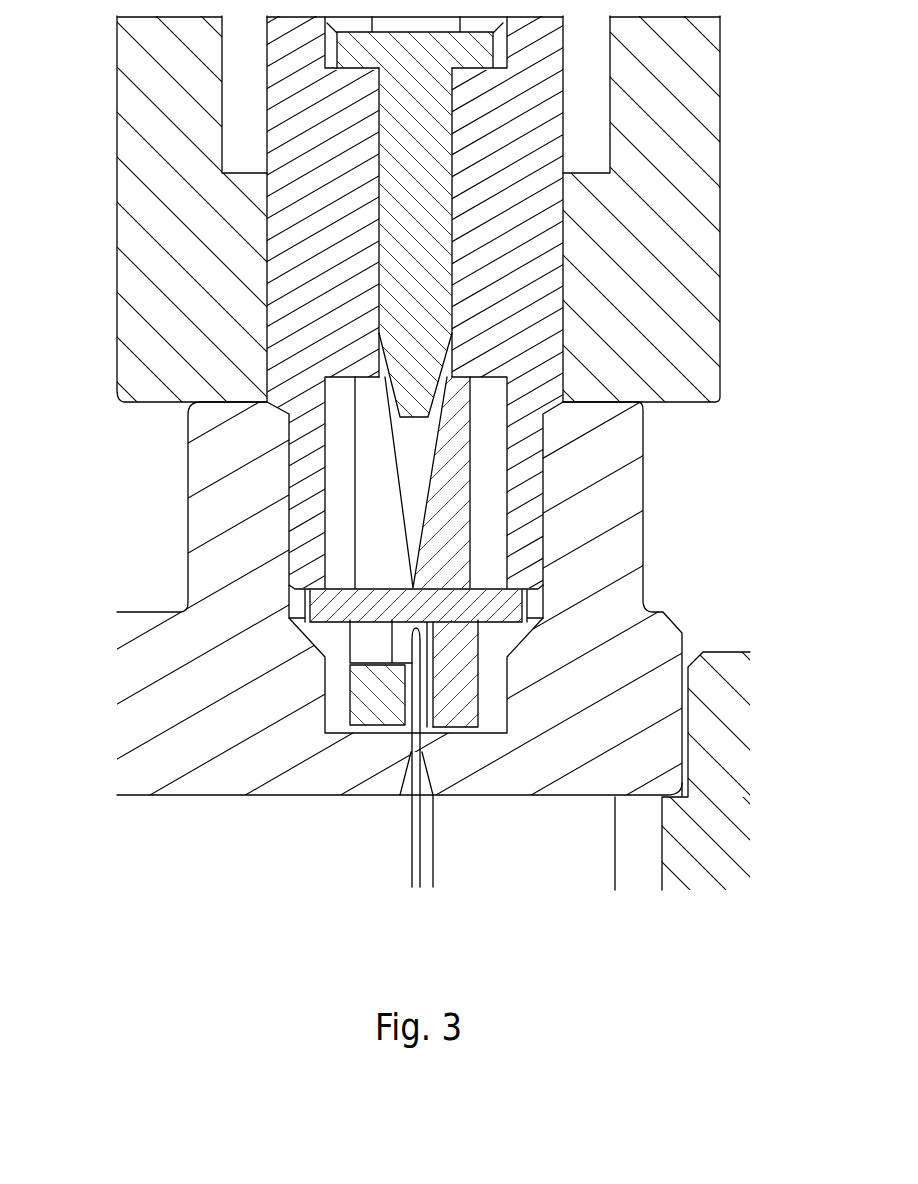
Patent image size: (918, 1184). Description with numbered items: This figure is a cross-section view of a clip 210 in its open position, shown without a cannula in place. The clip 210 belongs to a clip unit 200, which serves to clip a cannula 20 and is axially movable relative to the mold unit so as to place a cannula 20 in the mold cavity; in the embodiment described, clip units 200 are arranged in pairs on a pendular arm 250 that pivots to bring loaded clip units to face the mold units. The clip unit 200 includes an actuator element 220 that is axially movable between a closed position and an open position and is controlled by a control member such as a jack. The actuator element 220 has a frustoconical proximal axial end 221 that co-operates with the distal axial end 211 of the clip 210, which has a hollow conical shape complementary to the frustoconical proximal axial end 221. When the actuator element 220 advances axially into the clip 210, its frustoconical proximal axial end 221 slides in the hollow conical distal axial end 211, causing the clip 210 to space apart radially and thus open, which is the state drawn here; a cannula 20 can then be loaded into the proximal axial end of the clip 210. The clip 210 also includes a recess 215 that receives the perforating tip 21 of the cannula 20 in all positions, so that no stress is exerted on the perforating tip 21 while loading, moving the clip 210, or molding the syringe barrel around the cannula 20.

The pendular arm 250 is at (675, 205).
The actuator element 220 is at (415, 272).
The frustoconical proximal axial end 221 is at (413, 392).
The distal axial end 211 is at (453, 448).
The clip unit 200 is at (482, 516).
The perforating tip 21 is at (425, 640).
The clip 210 is at (448, 657).
The recess 215 is at (380, 647).
The cannula 20 is at (415, 688).